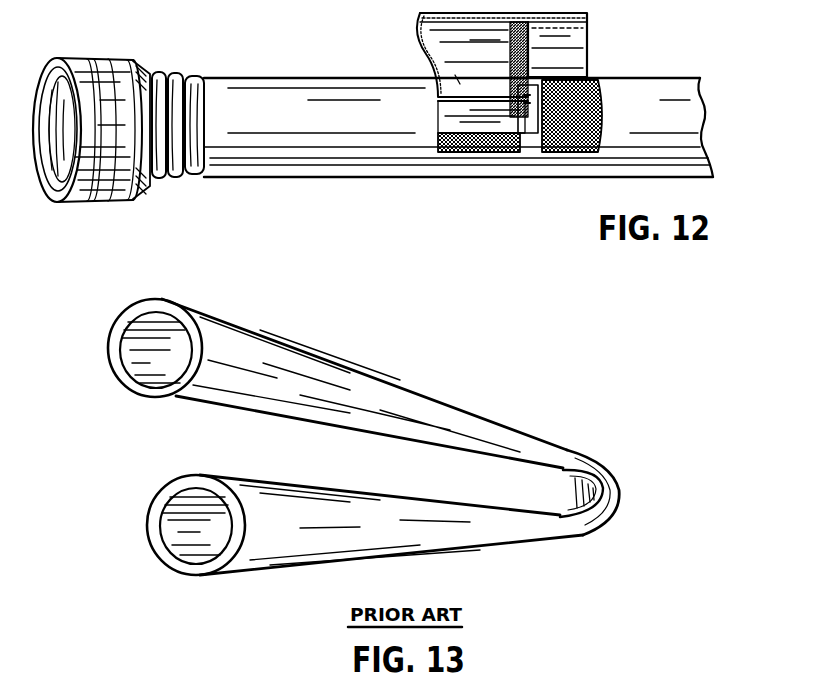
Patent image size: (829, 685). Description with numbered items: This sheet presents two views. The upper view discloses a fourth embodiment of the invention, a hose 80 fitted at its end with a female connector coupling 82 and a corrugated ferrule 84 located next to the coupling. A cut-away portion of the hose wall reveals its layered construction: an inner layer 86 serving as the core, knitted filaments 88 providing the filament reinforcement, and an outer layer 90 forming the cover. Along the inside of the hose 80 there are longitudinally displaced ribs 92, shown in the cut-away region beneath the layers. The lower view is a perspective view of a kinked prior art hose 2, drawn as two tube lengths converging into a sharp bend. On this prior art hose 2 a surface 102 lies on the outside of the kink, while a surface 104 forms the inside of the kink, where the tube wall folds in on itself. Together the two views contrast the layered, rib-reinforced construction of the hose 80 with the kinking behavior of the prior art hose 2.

In FIG. 12, the hose 80 is at (286, 66).
In FIG. 12, the female connector coupling 82 is at (72, 201).
In FIG. 12, the corrugated ferrule 84 is at (180, 73).
In FIG. 12, the inner layer 86 is at (437, 99).
In FIG. 12, the knitted filaments 88 is at (600, 78).
In FIG. 12, the outer layer 90 is at (573, 36).
In FIG. 12, the longitudinally displaced ribs 92 is at (478, 153).
In FIG. 13, the prior art hose 2 is at (460, 384).
In FIG. 13, the surface outside the kink 102 is at (618, 487).
In FIG. 13, the surface forming the inside of the kink 104 is at (583, 533).